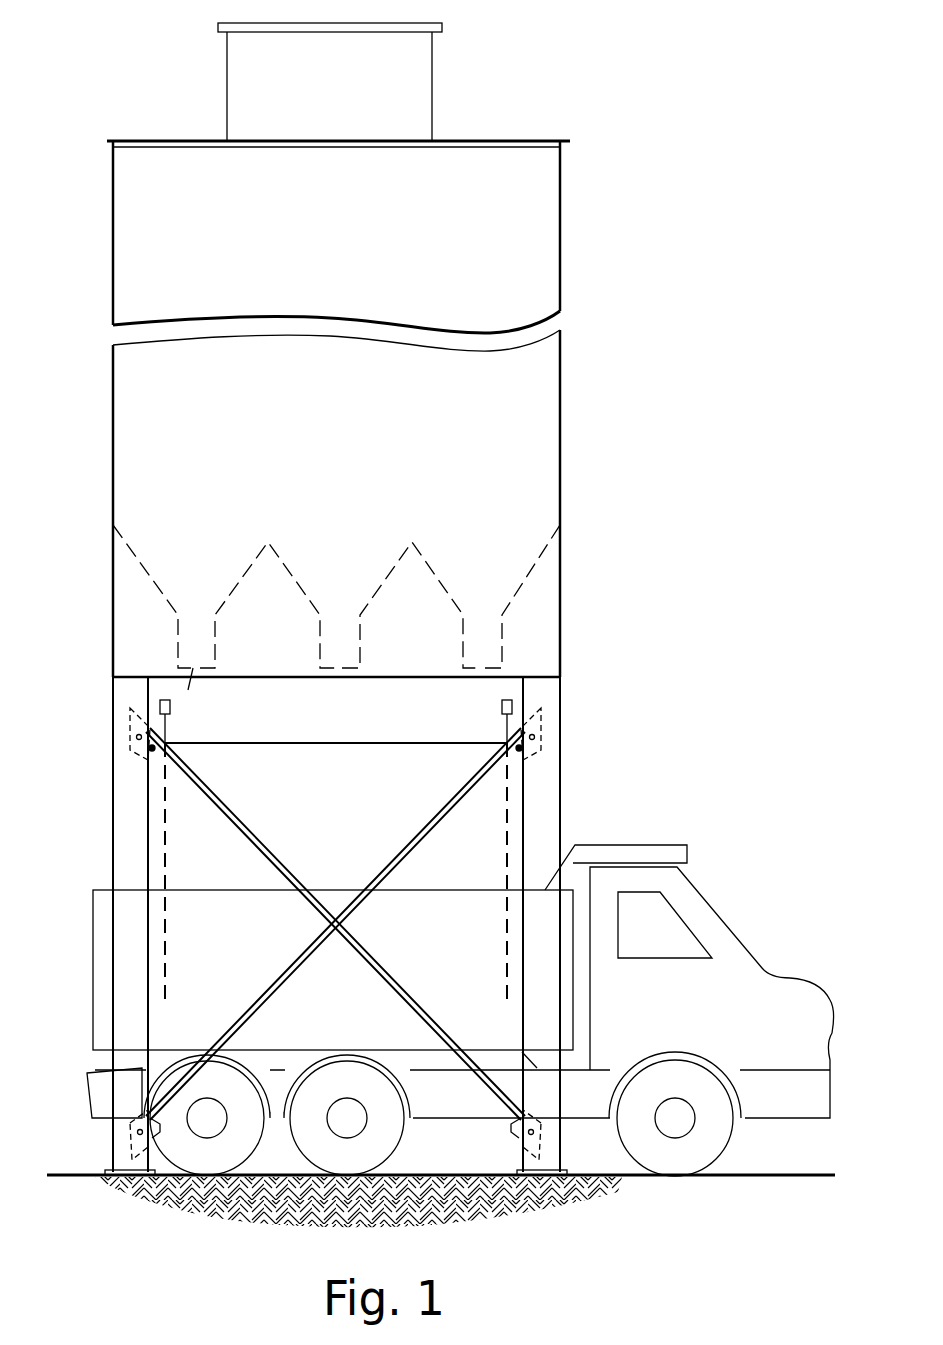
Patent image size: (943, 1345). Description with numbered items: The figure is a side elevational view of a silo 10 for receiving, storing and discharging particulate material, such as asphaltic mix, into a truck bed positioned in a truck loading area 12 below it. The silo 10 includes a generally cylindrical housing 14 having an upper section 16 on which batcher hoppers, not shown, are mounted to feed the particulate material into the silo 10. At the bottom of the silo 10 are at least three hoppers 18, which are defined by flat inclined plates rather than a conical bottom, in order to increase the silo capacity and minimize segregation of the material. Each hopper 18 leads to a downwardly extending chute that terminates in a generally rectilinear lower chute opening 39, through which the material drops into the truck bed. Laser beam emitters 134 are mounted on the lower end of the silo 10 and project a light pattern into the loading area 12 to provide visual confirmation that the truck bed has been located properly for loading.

The silo 10 is at (624, 290).
The truck loading area 12 is at (88, 790).
The housing 14 is at (561, 496).
The upper section 16 is at (485, 140).
The hoppers 18 is at (180, 535).
The lower chute openings 39 is at (182, 690).
The laser beam emitters 134 is at (170, 706).